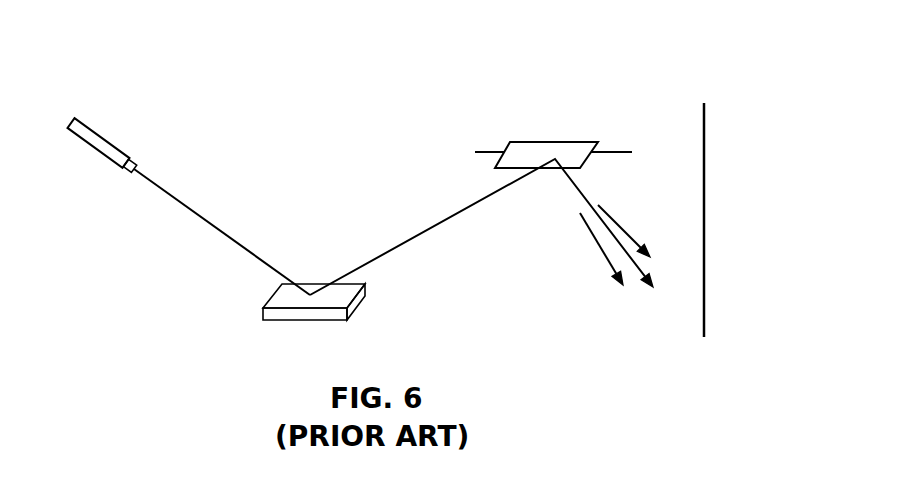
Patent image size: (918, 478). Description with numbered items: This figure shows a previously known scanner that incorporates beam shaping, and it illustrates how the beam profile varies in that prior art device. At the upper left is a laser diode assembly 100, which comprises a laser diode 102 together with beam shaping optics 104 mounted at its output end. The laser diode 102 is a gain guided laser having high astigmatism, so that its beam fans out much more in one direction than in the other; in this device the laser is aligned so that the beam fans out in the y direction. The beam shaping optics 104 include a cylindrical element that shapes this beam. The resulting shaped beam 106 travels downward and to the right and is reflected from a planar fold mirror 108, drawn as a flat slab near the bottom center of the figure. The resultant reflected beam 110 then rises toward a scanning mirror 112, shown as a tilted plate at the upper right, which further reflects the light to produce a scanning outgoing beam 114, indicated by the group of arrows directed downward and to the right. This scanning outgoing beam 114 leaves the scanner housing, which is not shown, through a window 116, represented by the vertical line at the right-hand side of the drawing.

The laser diode assembly 100 is at (103, 58).
The laser diode 102 is at (110, 124).
The beam shaping optics 104 is at (161, 145).
The shaped beam 106 is at (222, 232).
The planar fold mirror 108 is at (314, 322).
The reflected beam 110 is at (481, 227).
The scanning mirror 112 is at (553, 135).
The scanning outgoing beam 114 is at (588, 249).
The window 116 is at (742, 220).